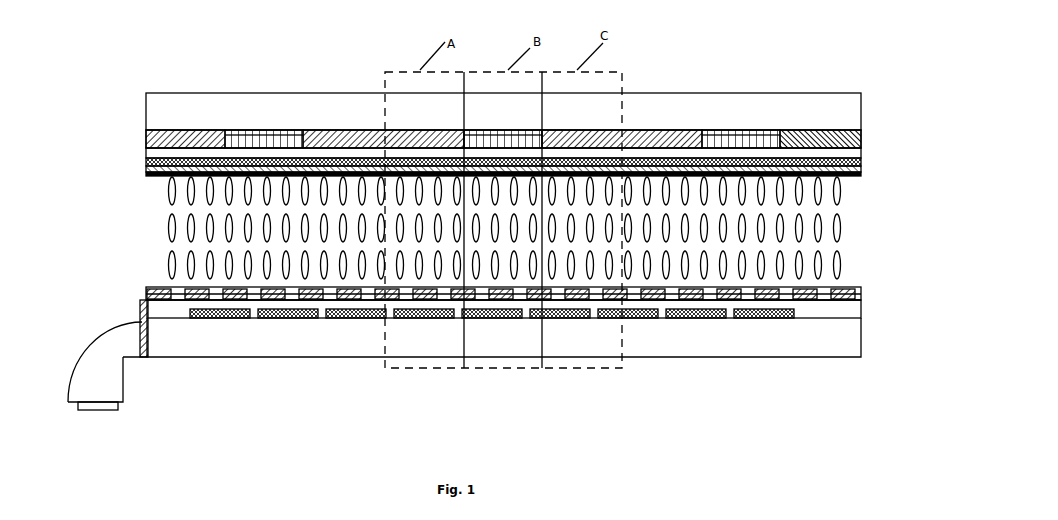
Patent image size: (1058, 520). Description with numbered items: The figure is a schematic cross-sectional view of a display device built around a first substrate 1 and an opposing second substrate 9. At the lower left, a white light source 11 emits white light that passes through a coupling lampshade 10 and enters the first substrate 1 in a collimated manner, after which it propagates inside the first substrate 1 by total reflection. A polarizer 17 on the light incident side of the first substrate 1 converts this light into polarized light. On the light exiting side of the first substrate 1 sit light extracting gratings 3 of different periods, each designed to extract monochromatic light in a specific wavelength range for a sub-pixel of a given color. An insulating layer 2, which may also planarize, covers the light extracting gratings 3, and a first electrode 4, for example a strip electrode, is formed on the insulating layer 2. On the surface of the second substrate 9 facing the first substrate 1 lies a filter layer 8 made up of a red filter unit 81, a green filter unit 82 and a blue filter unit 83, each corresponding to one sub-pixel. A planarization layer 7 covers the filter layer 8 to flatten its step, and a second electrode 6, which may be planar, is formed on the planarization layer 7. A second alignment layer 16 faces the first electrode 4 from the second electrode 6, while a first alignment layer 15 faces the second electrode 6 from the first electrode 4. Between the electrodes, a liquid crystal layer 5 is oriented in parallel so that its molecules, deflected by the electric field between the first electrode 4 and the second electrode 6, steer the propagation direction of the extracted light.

The first substrate 1 is at (861, 340).
The insulating layer 2 is at (546, 338).
The light extracting grating 3 is at (772, 317).
The first electrode 4 is at (861, 298).
The liquid crystal layer 5 is at (840, 229).
The second electrode 6 is at (861, 160).
The planarization layer 7 is at (861, 150).
The filter layer 8 is at (546, 91).
The second substrate 9 is at (861, 97).
The coupling lampshade 10 is at (85, 380).
The white light source 11 is at (93, 410).
The first alignment layer 15 is at (836, 288).
The second alignment layer 16 is at (861, 170).
The polarizer 17 is at (144, 356).
The red filter unit 81 is at (800, 130).
The green filter unit 82 is at (723, 130).
The blue filter unit 83 is at (650, 130).